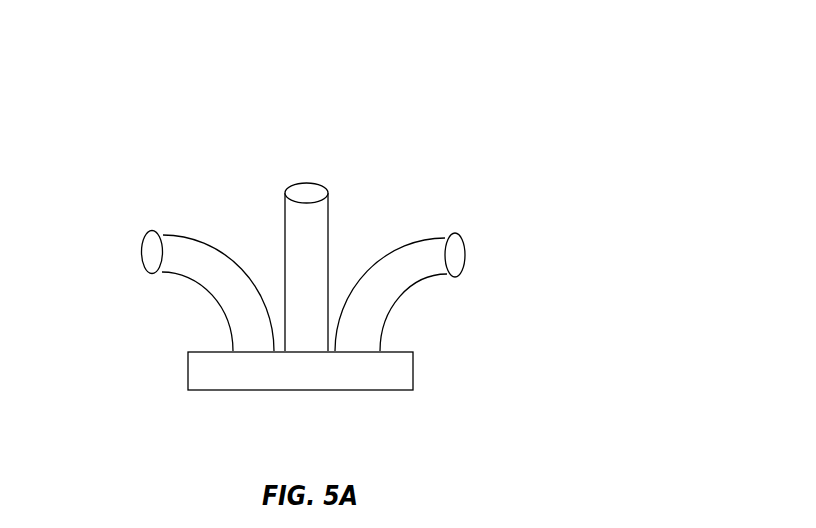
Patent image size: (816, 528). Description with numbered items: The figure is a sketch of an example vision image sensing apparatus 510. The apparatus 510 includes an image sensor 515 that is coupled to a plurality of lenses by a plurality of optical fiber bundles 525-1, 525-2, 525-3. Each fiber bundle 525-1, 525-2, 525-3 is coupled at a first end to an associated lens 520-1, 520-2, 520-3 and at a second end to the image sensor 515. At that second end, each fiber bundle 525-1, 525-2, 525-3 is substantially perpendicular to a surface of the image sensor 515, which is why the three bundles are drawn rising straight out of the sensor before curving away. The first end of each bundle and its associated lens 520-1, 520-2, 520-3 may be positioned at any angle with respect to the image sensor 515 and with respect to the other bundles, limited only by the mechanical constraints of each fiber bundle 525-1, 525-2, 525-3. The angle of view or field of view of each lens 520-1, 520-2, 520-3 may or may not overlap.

The vision apparatus 510 is at (65, 49).
The image sensor 515 is at (257, 399).
The lens 520-1 is at (141, 241).
The lens 520-2 is at (305, 183).
The lens 520-3 is at (466, 252).
The optical fiber bundle 525-1 is at (206, 239).
The optical fiber bundle 525-2 is at (330, 246).
The optical fiber bundle 525-3 is at (418, 290).